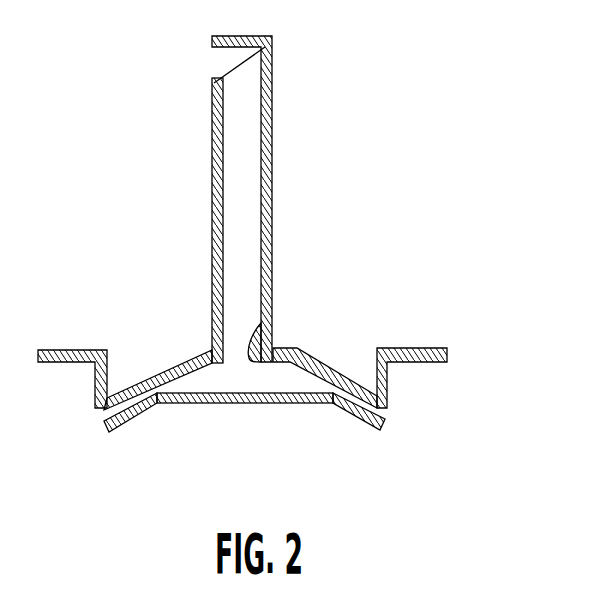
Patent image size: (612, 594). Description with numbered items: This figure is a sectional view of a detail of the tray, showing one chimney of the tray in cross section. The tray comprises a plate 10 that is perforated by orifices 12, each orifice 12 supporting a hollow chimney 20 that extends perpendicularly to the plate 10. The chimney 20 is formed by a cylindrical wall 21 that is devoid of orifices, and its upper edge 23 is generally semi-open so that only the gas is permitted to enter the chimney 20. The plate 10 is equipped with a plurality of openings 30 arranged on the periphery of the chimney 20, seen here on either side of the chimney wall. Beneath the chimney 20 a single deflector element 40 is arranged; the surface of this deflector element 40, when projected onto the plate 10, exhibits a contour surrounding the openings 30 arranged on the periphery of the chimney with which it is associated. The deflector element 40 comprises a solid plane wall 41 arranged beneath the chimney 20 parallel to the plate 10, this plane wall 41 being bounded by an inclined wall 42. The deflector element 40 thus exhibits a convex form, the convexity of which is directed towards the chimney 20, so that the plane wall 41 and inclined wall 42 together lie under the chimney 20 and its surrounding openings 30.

The plate 10 is at (433, 362).
The orifice 12 is at (265, 315).
The chimney 20 is at (282, 196).
The cylindrical wall 21 is at (213, 158).
The upper edge 23 is at (214, 83).
The opening 30 is at (122, 366).
The deflector element 40 is at (260, 459).
The plane wall 41 is at (255, 403).
The inclined wall 42 is at (122, 420).